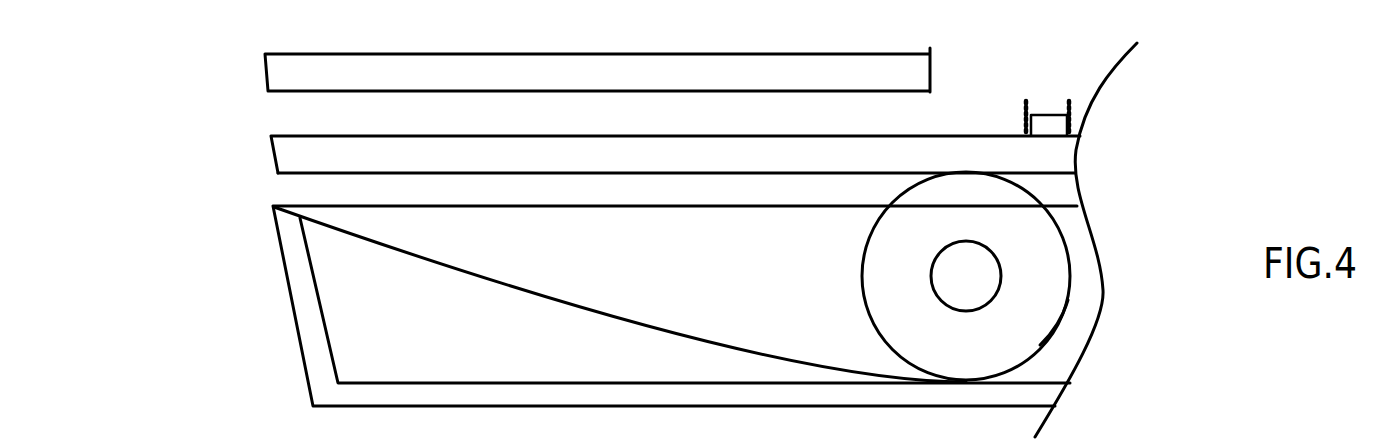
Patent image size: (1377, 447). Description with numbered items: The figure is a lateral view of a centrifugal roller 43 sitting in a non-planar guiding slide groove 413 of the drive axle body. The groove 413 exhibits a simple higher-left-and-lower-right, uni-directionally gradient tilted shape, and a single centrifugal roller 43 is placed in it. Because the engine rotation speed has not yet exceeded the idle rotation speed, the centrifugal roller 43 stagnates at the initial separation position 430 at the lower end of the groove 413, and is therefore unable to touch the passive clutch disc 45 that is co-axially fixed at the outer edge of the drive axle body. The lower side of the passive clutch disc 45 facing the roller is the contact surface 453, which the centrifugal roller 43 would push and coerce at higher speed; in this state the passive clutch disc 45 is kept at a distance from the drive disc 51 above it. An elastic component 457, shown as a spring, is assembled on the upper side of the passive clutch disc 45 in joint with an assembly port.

The drive disc 51 is at (292, 73).
The passive clutch disc 45 is at (600, 195).
The contact surface 453 is at (298, 157).
The elastic component 457 is at (1070, 103).
The non-planar guiding slide groove 413 is at (348, 332).
The centrifugal roller 43 is at (910, 298).
The initial separation position 430 is at (1052, 338).